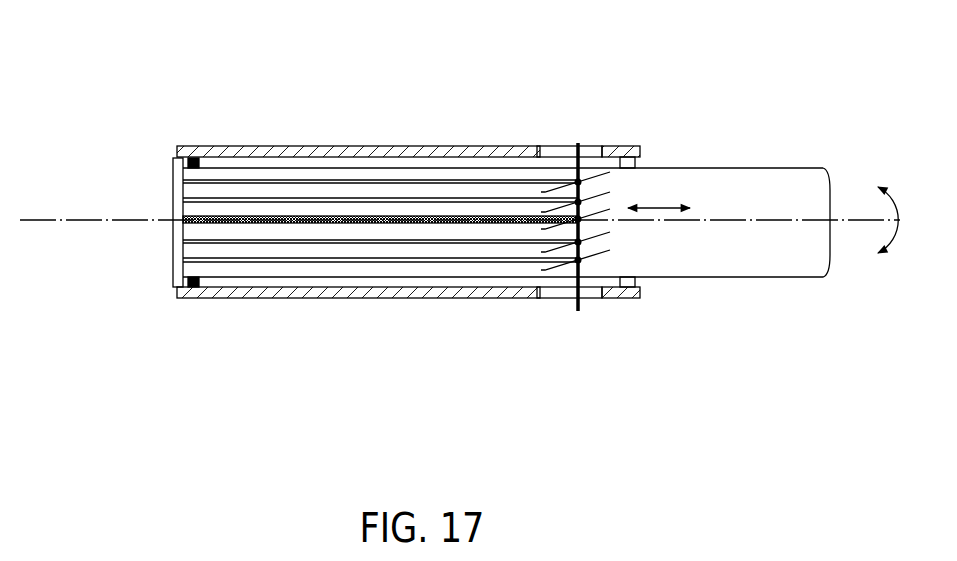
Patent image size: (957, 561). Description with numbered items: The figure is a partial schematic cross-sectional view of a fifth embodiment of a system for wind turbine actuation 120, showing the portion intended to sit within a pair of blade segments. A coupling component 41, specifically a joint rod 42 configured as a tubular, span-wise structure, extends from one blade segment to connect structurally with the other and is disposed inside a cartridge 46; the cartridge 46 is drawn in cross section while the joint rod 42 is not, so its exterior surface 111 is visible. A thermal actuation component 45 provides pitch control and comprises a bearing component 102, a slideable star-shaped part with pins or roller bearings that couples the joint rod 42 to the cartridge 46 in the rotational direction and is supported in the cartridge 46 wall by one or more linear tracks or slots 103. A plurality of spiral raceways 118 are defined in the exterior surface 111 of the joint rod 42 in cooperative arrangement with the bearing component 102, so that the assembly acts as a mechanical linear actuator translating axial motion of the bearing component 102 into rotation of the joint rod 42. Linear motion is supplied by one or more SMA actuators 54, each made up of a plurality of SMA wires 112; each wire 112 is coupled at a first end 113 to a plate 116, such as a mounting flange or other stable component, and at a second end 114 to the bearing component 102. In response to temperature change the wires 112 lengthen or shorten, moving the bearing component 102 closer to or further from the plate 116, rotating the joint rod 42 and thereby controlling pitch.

The system for wind turbine actuation 120 is at (138, 65).
The thermal actuation component 45 is at (373, 252).
The cartridge 46 is at (435, 146).
The linear tracks or slots 103 is at (552, 146).
The spiral raceways 118 is at (628, 290).
The first end 113 is at (173, 212).
The plate 116 is at (173, 245).
The SMA wires 112 is at (292, 218).
The SMA actuators 54 is at (258, 263).
The bearing component 102 is at (577, 305).
The second end 114 is at (598, 167).
The exterior surface 111 is at (682, 187).
The coupling component 41 is at (805, 278).
The joint rod 42 is at (778, 167).